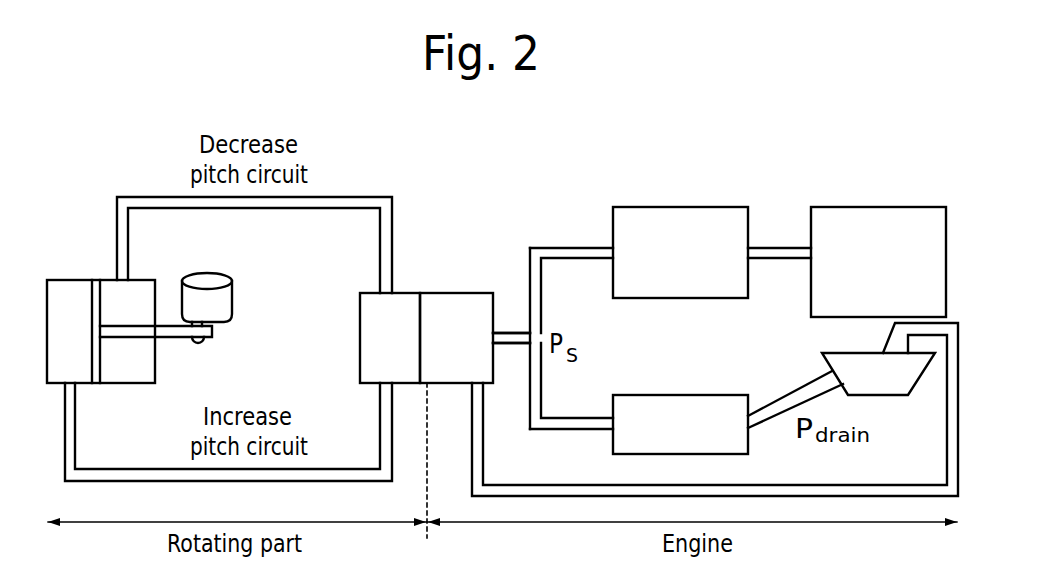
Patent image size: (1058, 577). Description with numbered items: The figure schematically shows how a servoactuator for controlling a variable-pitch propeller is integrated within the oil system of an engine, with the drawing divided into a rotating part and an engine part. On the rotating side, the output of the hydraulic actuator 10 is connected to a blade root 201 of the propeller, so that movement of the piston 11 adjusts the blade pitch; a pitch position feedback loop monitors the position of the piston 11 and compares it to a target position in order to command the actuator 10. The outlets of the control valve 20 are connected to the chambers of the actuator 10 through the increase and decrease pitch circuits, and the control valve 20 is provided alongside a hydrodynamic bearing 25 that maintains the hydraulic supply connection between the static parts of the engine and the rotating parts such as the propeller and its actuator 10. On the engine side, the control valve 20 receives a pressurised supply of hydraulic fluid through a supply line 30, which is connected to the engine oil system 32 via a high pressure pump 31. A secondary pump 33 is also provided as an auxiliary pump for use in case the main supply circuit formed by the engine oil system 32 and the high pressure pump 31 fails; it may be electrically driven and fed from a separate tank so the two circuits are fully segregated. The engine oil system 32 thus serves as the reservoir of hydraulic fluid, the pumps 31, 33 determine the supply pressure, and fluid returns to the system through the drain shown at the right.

The actuator 10 is at (83, 280).
The piston 11 is at (97, 333).
The blade root 201 is at (232, 290).
The hydrodynamic bearing 25 is at (370, 315).
The control valve 20 is at (432, 300).
The supply line 30 is at (518, 328).
The high pressure pump 31 is at (665, 207).
The engine oil system 32 is at (895, 207).
The secondary pump 33 is at (665, 395).